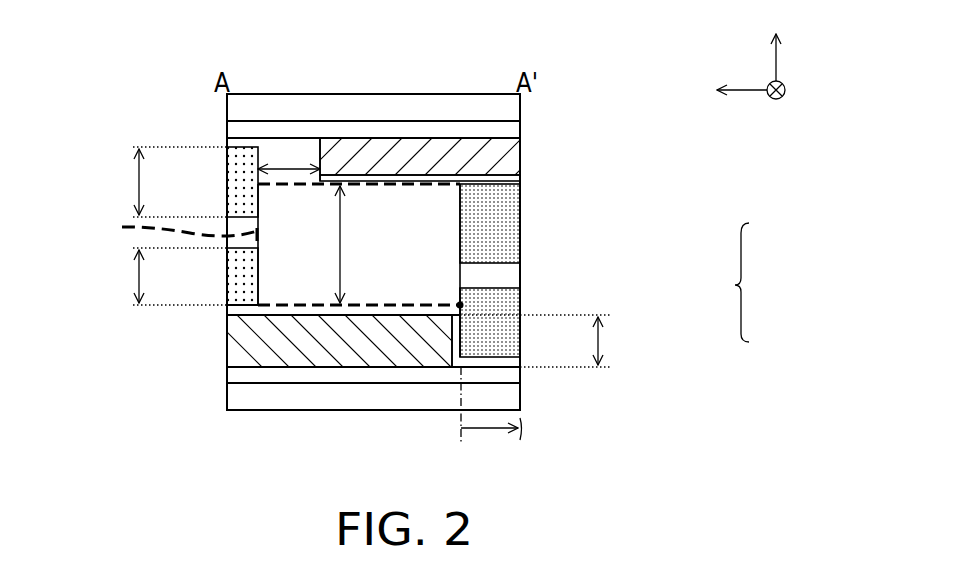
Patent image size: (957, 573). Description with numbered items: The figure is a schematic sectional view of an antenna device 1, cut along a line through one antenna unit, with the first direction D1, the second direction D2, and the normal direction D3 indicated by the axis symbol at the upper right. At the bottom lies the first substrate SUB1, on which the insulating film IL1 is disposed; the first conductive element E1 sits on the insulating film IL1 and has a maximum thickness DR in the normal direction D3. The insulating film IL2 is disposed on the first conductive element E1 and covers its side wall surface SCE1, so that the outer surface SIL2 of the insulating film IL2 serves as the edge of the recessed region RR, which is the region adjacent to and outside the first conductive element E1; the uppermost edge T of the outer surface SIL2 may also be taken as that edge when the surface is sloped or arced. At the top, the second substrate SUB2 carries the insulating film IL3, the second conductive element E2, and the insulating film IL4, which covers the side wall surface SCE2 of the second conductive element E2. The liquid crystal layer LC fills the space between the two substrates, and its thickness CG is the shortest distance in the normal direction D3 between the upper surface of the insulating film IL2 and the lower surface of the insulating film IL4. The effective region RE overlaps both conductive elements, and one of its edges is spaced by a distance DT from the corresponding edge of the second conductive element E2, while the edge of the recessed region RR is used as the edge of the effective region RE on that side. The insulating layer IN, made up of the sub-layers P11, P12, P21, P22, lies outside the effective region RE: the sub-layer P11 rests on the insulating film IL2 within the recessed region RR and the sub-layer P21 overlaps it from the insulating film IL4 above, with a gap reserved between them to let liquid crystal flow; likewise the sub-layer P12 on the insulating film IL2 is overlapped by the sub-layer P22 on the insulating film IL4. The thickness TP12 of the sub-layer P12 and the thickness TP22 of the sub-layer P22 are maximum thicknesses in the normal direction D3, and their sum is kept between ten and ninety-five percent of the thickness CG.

The antenna device 1 is at (752, 497).
The first substrate SUB1 is at (238, 398).
The second substrate SUB2 is at (508, 111).
The insulating film IL1 is at (236, 374).
The insulating film IL2 is at (236, 311).
The insulating film IL3 is at (505, 134).
The insulating film IL4 is at (508, 181).
The first conductive element E1 is at (236, 345).
The second conductive element E2 is at (505, 160).
The liquid crystal layer LC is at (443, 278).
The sub-layer P11 is at (508, 337).
The sub-layer P12 is at (240, 278).
The sub-layer P21 is at (508, 234).
The sub-layer P22 is at (240, 180).
The insulating layer IN is at (751, 280).
The side wall surface SCE1 is at (462, 324).
The side wall surface SCE2 is at (318, 156).
The outer surface SIL2 is at (454, 336).
The effective region RE is at (176, 228).
The uppermost edge T is at (458, 307).
The thickness of the liquid crystal layer CG is at (321, 244).
The distance DT is at (289, 153).
The maximum thickness DR is at (599, 340).
The recessed region RR is at (491, 421).
The thickness of the sub-layer P22 TP22 is at (153, 182).
The thickness of the sub-layer P12 TP12 is at (153, 276).
The first direction D1 is at (778, 109).
The second direction D2 is at (725, 90).
The normal direction D3 is at (777, 41).